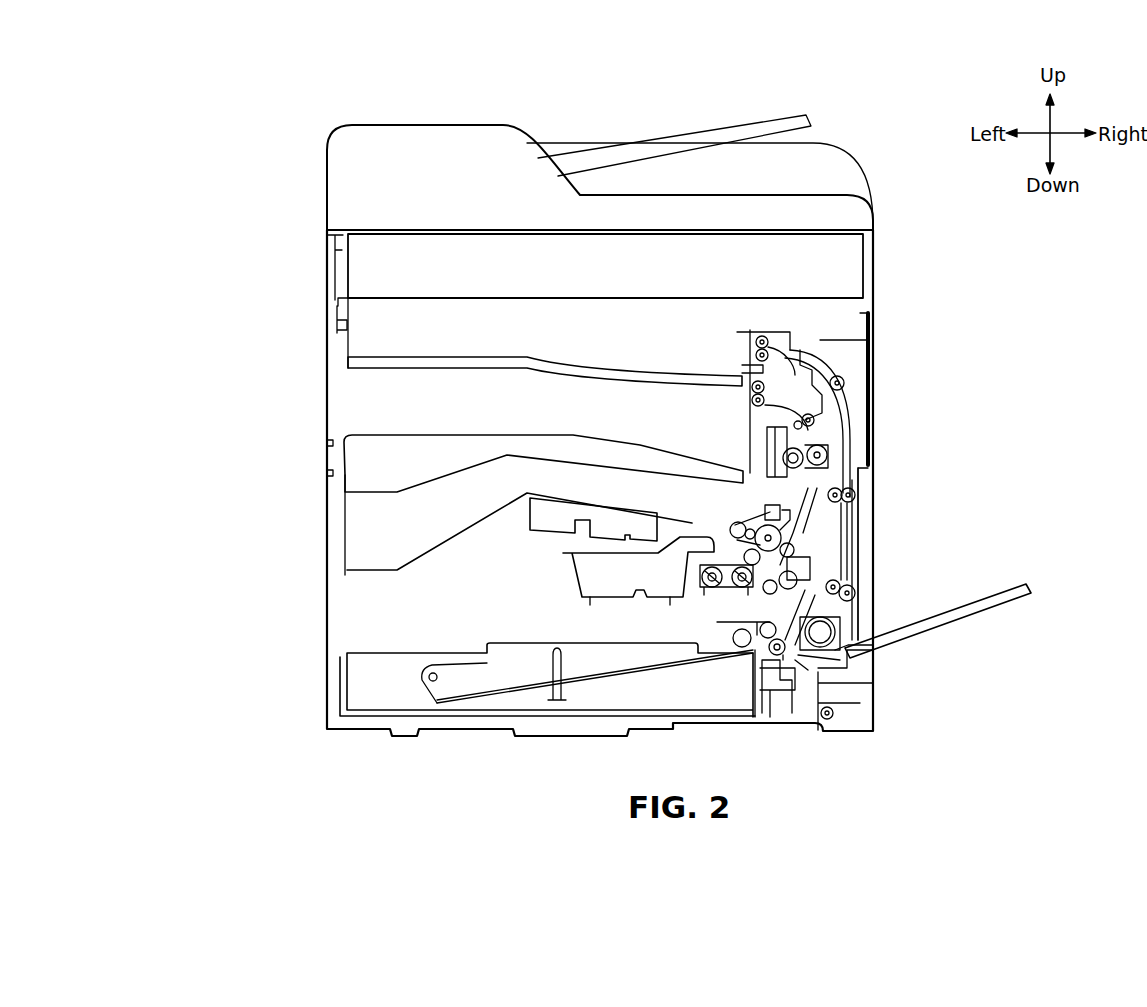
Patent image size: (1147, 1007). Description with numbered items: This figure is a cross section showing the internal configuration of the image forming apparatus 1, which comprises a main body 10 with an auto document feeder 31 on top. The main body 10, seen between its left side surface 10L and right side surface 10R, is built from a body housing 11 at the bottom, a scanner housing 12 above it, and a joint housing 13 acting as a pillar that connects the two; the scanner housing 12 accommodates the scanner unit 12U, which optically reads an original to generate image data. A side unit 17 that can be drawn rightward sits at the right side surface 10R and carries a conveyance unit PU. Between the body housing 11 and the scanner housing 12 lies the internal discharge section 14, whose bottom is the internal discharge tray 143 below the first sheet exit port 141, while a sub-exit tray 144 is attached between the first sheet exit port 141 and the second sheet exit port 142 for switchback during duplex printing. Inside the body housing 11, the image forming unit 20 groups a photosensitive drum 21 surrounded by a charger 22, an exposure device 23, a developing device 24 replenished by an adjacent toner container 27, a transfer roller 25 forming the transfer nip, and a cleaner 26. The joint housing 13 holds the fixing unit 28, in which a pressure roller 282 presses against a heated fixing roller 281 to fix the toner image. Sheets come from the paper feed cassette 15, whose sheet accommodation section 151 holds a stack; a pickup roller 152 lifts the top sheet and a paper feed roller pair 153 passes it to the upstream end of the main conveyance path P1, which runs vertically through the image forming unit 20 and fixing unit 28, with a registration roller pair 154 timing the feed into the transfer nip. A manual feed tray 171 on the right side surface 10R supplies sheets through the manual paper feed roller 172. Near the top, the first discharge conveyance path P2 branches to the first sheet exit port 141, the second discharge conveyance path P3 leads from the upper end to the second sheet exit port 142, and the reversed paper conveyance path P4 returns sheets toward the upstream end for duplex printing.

The image forming apparatus 1 is at (348, 96).
The auto document feeder 31 is at (872, 162).
The main body 10 is at (990, 250).
The left side surface 10L is at (330, 521).
The right side surface 10R is at (880, 701).
The scanner housing 12 is at (878, 258).
The scanner unit 12U is at (355, 268).
The joint housing 13 is at (880, 350).
The side unit 17 is at (880, 377).
The fixing unit 28 is at (850, 437).
The reversed paper conveyance path P4 is at (845, 408).
The fixing roller 281 is at (770, 455).
The pressure roller 282 is at (830, 456).
The first discharge conveyance path P2 is at (747, 409).
The body housing 11 is at (878, 499).
The internal discharge section 14 is at (362, 395).
The sub-exit tray 144 is at (468, 355).
The internal discharge tray 143 is at (467, 433).
The second sheet exit port 142 is at (750, 350).
The second discharge conveyance path P3 is at (785, 340).
The first sheet exit port 141 is at (748, 398).
The exposure device 23 is at (540, 535).
The toner container 27 is at (576, 590).
The developing device 24 is at (762, 596).
The charger 22 is at (736, 530).
The photosensitive drum 21 is at (745, 521).
The cleaner 26 is at (776, 505).
The image forming unit 20 is at (816, 528).
The main conveyance path P1 is at (858, 480).
The transfer roller 25 is at (823, 538).
The conveyance unit PU is at (828, 553).
The registration roller pair 154 is at (828, 570).
The pickup roller 152 is at (725, 635).
The paper feed roller pair 153 is at (779, 700).
The manual paper feed roller 172 is at (820, 652).
The manual feed tray 171 is at (985, 625).
The paper feed cassette 15 is at (542, 713).
The sheet accommodation section 151 is at (378, 730).